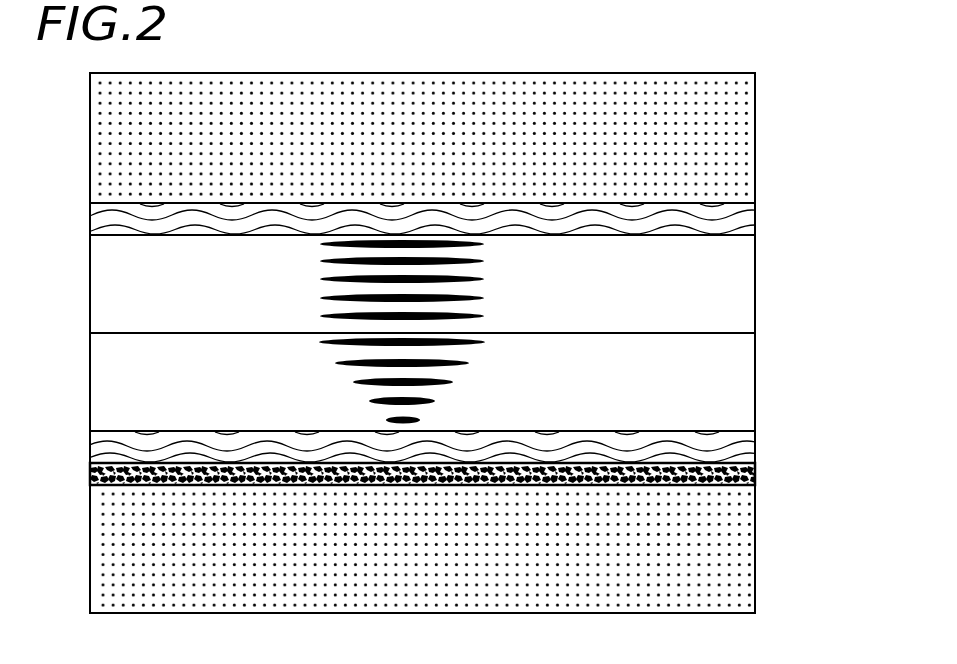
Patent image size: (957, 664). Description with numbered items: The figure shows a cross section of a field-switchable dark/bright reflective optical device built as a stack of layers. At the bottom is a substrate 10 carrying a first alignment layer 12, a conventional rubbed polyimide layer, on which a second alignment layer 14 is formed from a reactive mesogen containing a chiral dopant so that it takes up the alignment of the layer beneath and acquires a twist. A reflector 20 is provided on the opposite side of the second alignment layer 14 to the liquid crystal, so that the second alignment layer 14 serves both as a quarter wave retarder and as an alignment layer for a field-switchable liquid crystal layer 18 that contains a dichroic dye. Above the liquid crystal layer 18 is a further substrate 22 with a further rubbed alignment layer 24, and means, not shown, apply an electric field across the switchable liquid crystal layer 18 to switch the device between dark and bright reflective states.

The substrate 10 is at (737, 523).
The first alignment layer 12 is at (743, 448).
The second alignment layer 14 is at (727, 397).
The field-switchable liquid crystal layer 18 is at (725, 282).
The reflector 20 is at (750, 472).
The further substrate 22 is at (733, 141).
The further rubbed alignment layer 24 is at (752, 213).